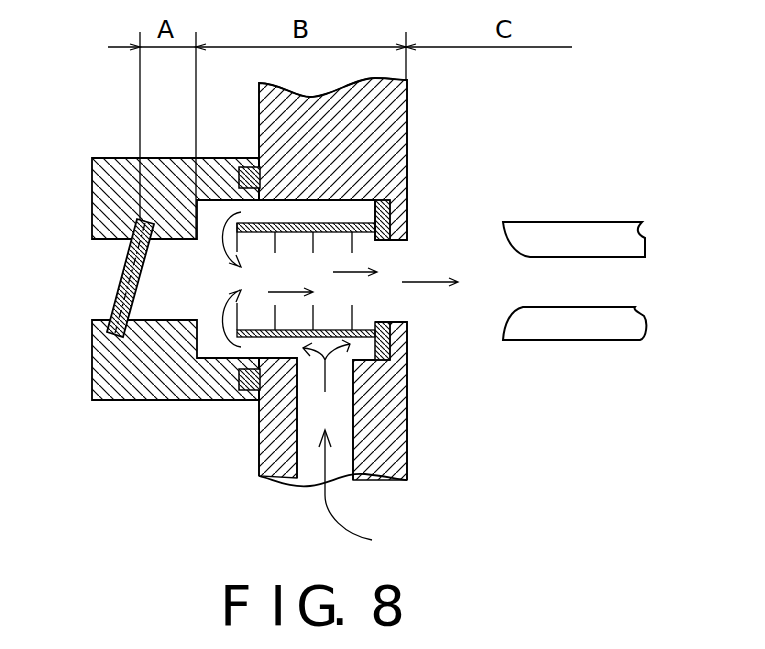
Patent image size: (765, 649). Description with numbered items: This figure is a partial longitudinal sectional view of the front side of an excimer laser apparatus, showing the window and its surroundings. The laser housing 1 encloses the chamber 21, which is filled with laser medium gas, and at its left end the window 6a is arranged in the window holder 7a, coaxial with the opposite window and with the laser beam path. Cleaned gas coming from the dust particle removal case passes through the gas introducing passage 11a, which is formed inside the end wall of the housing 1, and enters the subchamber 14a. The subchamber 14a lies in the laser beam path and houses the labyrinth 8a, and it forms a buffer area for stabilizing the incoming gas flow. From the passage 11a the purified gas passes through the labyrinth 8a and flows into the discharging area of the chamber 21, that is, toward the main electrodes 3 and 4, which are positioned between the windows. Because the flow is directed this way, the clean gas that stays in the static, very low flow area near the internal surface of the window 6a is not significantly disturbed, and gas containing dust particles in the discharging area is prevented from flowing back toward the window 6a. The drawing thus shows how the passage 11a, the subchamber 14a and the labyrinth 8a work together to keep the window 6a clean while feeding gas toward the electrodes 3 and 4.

The laser housing 1 is at (398, 103).
The main electrode 3 is at (578, 222).
The main electrode 4 is at (580, 340).
The window 6a is at (125, 262).
The window holder 7a is at (112, 158).
The labyrinth 8a is at (290, 223).
The gas introducing passage 11a is at (340, 398).
The subchamber 14a is at (333, 210).
The chamber 21 is at (534, 152).